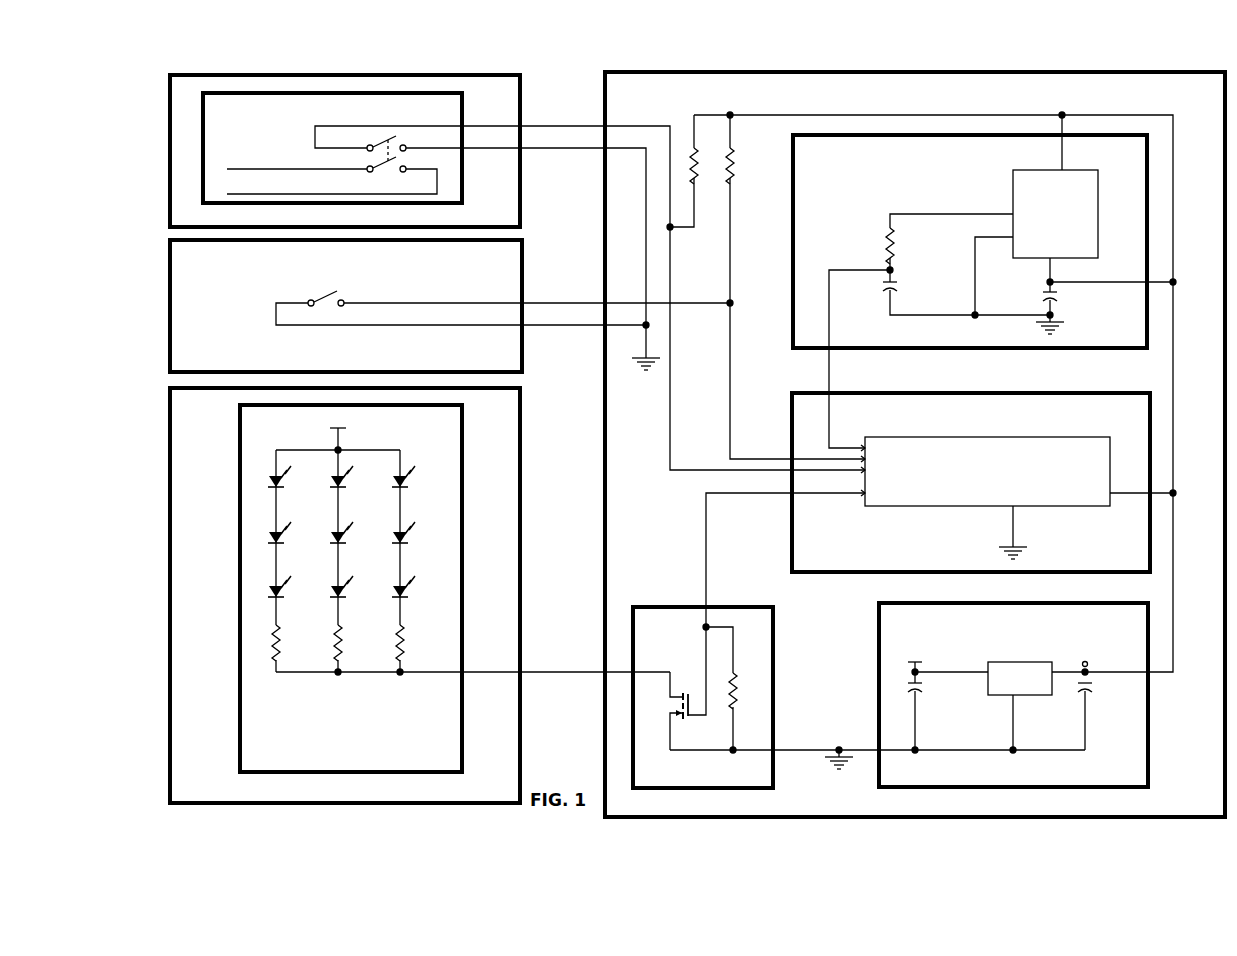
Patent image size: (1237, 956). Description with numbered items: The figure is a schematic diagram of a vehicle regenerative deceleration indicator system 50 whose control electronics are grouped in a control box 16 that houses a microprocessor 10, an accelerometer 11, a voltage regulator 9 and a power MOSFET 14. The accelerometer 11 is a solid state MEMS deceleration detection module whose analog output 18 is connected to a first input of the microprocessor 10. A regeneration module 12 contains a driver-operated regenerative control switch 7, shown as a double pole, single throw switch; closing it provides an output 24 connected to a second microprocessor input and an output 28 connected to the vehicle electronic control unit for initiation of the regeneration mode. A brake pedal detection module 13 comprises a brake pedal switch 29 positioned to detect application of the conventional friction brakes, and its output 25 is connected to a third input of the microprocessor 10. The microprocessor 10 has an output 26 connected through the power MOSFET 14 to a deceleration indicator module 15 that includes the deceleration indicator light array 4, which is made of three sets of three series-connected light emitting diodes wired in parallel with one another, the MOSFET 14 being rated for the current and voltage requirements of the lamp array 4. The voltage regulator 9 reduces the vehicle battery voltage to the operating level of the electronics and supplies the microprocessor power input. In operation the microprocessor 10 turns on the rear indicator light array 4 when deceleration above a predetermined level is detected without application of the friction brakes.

The vehicle regenerative deceleration indicator system 50 is at (560, 56).
The regenerative control switch 7 is at (407, 138).
The output to vehicle electronic control unit 28 is at (350, 188).
The regeneration module 12 is at (463, 183).
The brake pedal detection module 13 is at (523, 279).
The brake pedal switch 29 is at (343, 292).
The deceleration indicator module 15 is at (521, 508).
The deceleration indicator light array 4 is at (463, 591).
The control box 16 is at (604, 428).
The regeneration module output 24 is at (670, 450).
The brake pedal detection module output 25 is at (695, 304).
The microprocessor output 26 is at (706, 542).
The accelerometer output 18 is at (830, 378).
The microprocessor 10 is at (790, 436).
The accelerometer 11 is at (792, 232).
The voltage regulator 9 is at (878, 642).
The power MOSFET 14 is at (774, 685).